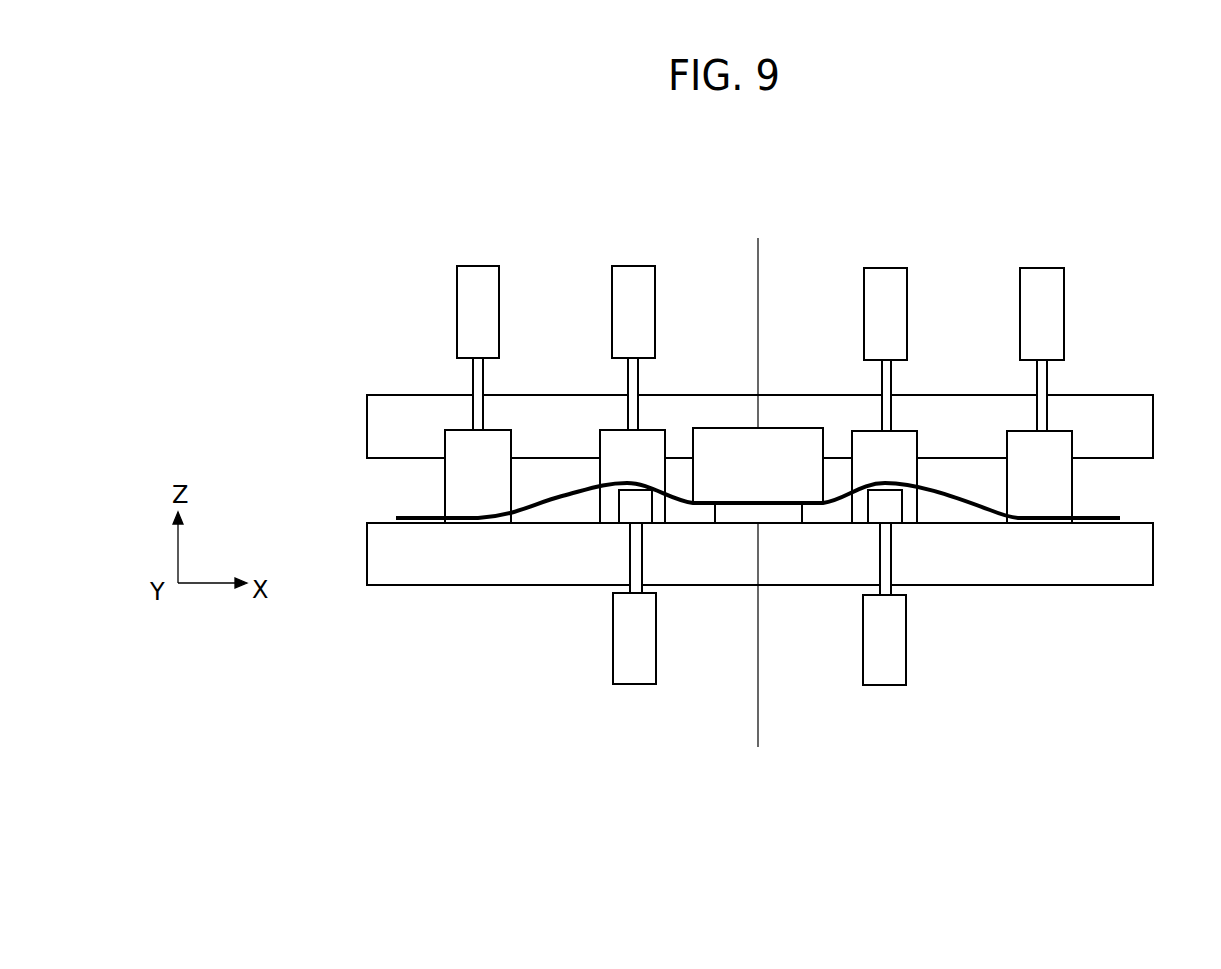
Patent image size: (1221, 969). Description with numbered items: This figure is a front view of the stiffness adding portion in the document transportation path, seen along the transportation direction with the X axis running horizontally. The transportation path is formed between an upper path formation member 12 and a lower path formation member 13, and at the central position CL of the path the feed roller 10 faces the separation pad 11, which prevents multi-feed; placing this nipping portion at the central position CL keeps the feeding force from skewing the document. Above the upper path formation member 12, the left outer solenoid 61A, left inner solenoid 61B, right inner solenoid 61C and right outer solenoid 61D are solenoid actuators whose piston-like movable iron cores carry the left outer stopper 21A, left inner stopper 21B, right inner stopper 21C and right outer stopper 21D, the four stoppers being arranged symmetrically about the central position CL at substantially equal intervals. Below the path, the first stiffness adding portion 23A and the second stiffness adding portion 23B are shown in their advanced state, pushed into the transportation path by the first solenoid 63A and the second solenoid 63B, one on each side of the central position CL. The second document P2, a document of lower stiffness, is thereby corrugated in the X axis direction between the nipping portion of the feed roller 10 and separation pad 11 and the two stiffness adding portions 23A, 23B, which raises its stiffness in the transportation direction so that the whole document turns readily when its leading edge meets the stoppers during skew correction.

The feed roller 10 is at (787, 427).
The separation pad 11 is at (782, 519).
The upper path formation member 12 is at (381, 395).
The lower path formation member 13 is at (378, 585).
The left outer stopper 21A is at (1071, 431).
The left inner stopper 21B is at (912, 431).
The right inner stopper 21C is at (647, 430).
The right outer stopper 21D is at (503, 430).
The first stiffness adding portion 23A is at (897, 508).
The second stiffness adding portion 23B is at (623, 508).
The left outer solenoid 61A is at (1043, 268).
The left inner solenoid 61B is at (885, 268).
The right inner solenoid 61C is at (633, 266).
The right outer solenoid 61D is at (478, 266).
The first solenoid 63A is at (885, 686).
The second solenoid 63B is at (637, 685).
The second document P2 is at (532, 508).
The central position CL is at (761, 476).